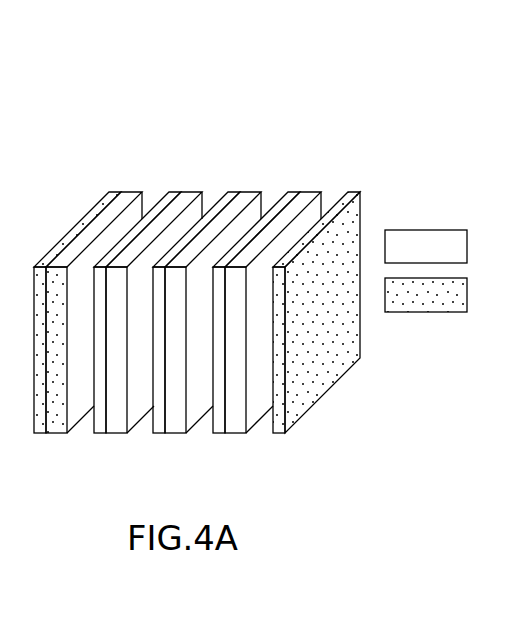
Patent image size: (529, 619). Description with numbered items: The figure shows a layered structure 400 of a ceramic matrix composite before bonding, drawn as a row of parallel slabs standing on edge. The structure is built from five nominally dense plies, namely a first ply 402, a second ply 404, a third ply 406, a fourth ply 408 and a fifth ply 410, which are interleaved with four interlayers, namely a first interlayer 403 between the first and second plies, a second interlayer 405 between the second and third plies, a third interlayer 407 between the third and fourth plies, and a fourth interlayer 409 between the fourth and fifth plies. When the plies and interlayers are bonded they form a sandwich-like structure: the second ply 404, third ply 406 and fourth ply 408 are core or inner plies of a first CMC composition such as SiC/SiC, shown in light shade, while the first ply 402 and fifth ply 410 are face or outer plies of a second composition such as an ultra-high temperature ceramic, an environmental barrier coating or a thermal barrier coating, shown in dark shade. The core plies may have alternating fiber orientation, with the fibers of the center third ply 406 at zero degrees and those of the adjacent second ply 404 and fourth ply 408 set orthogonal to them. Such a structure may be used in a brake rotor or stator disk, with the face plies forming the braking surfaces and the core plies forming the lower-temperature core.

The layered structure 400 is at (341, 123).
The first ply 402 is at (118, 191).
The first interlayer 403 is at (71, 423).
The second ply 404 is at (178, 191).
The second interlayer 405 is at (131, 423).
The third ply 406 is at (237, 191).
The third interlayer 407 is at (190, 423).
The fourth ply 408 is at (297, 191).
The fourth interlayer 409 is at (250, 423).
The fifth ply 410 is at (356, 191).